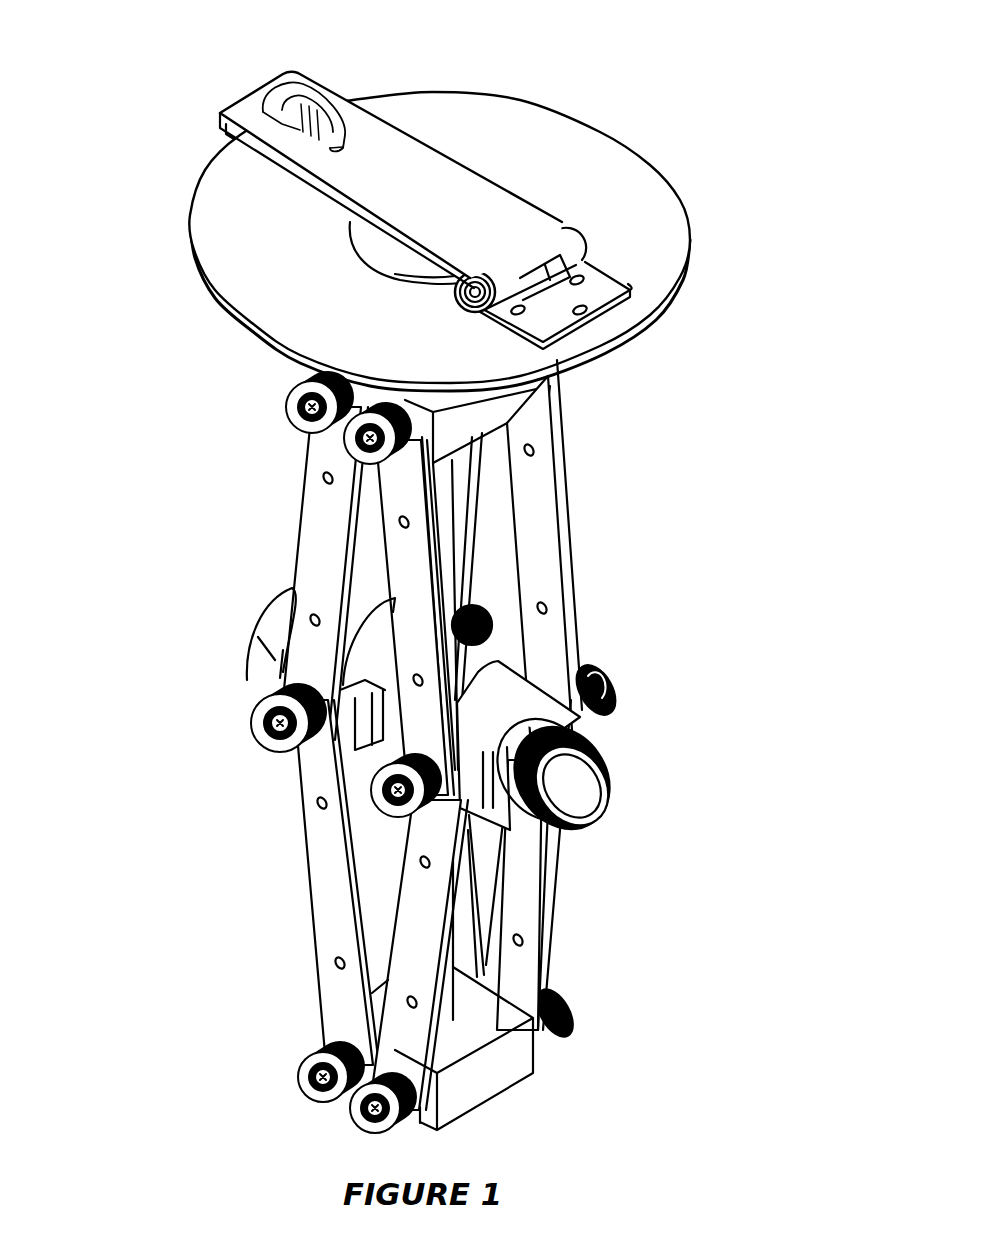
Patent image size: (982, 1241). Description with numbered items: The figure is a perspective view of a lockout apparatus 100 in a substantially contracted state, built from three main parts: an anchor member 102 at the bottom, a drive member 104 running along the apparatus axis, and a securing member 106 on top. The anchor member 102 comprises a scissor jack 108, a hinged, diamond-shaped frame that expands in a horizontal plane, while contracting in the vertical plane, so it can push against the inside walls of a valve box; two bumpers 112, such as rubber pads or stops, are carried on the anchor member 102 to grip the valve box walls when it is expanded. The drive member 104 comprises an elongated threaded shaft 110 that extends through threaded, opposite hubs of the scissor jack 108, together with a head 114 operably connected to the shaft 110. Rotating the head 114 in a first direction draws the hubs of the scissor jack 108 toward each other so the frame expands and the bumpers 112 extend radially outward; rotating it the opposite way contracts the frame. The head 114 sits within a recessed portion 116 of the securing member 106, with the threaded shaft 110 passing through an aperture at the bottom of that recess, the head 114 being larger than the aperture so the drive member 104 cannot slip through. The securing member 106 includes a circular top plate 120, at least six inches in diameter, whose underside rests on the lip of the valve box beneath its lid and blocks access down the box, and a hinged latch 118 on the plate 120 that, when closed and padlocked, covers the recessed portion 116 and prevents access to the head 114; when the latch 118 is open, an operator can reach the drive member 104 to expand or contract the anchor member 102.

The lockout apparatus 100 is at (543, 52).
The anchor member 102 is at (150, 355).
The drive member 104 is at (454, 517).
The securing member 106 is at (715, 68).
The scissor jack 108 is at (567, 462).
The threaded shaft 110 is at (447, 576).
The bumpers 112 is at (266, 623).
The head 114 is at (395, 272).
The recessed portion 116 is at (350, 256).
The hinged latch 118 is at (476, 162).
The top plate 120 is at (451, 91).